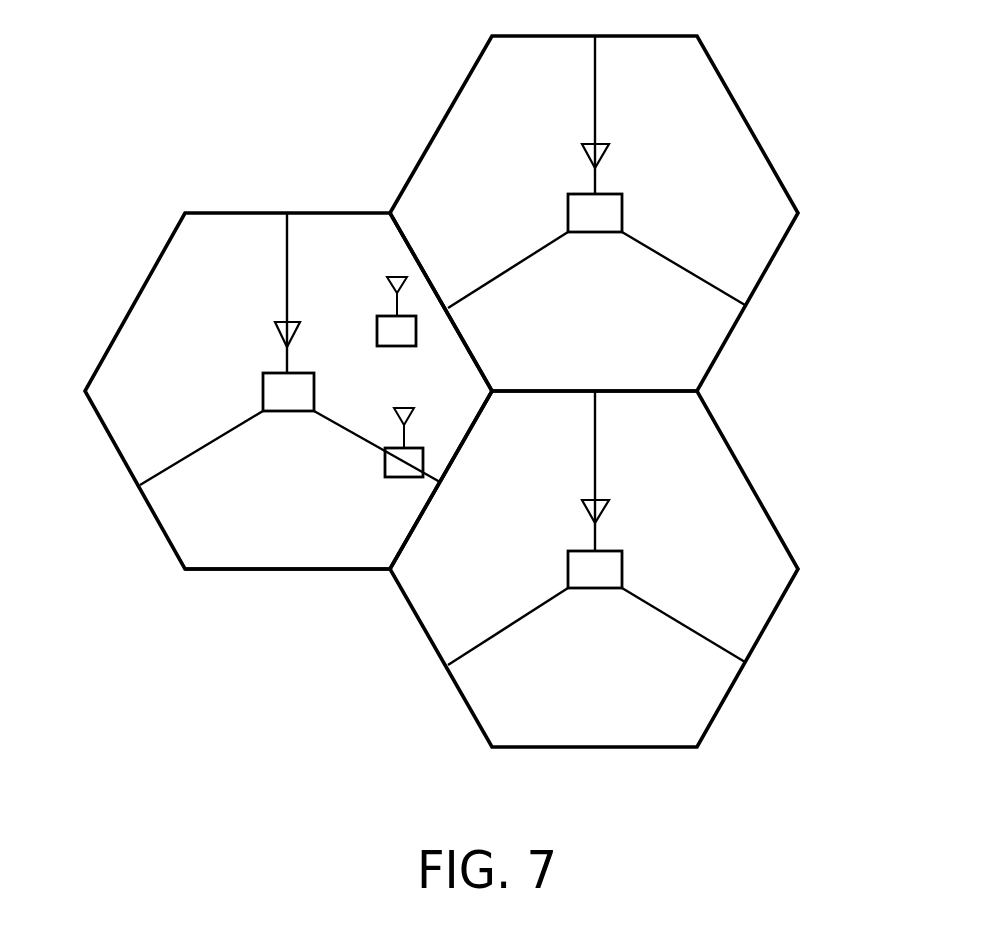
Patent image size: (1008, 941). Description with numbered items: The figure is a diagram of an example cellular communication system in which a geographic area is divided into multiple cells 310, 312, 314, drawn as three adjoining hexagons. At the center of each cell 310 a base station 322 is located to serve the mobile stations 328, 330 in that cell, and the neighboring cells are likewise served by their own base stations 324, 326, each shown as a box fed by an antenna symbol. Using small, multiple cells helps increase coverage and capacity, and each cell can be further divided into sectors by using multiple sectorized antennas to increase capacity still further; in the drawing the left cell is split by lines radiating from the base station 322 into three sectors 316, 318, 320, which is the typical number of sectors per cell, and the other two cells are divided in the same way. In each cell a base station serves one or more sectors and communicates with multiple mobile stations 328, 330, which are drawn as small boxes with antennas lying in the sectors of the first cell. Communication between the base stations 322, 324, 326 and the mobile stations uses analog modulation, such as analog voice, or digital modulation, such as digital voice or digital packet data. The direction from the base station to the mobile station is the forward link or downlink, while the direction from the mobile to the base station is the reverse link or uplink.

The cell 310 is at (125, 307).
The cell 312 is at (417, 622).
The cell 314 is at (760, 143).
The sector 316 is at (238, 250).
The sector 318 is at (345, 237).
The sector 320 is at (207, 550).
The base station 322 is at (288, 412).
The base station 324 is at (610, 233).
The base station 326 is at (605, 589).
The mobile station 328 is at (416, 316).
The mobile station 330 is at (423, 456).